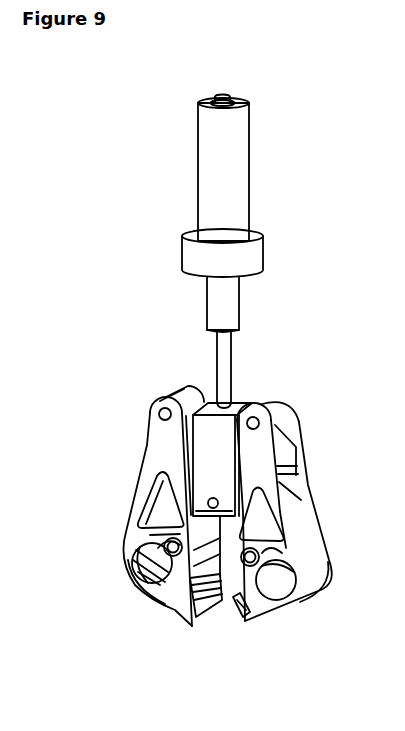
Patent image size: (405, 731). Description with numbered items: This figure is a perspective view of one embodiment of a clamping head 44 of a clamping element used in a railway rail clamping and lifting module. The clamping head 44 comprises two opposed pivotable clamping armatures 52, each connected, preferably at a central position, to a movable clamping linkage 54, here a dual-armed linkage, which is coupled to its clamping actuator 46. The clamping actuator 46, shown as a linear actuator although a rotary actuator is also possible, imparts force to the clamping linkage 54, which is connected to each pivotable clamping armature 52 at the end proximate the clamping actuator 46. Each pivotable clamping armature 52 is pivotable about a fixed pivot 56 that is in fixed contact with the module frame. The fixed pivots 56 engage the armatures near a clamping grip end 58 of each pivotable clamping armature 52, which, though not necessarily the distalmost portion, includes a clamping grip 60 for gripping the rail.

The clamping head 44 is at (128, 178).
The clamping actuator 46 is at (223, 93).
The pivotable clamping armature 52 is at (142, 485).
The clamping linkage 54 is at (240, 404).
The fixed pivot 56 is at (127, 560).
The clamping grip end 58 is at (167, 603).
The clamping grip 60 is at (240, 612).